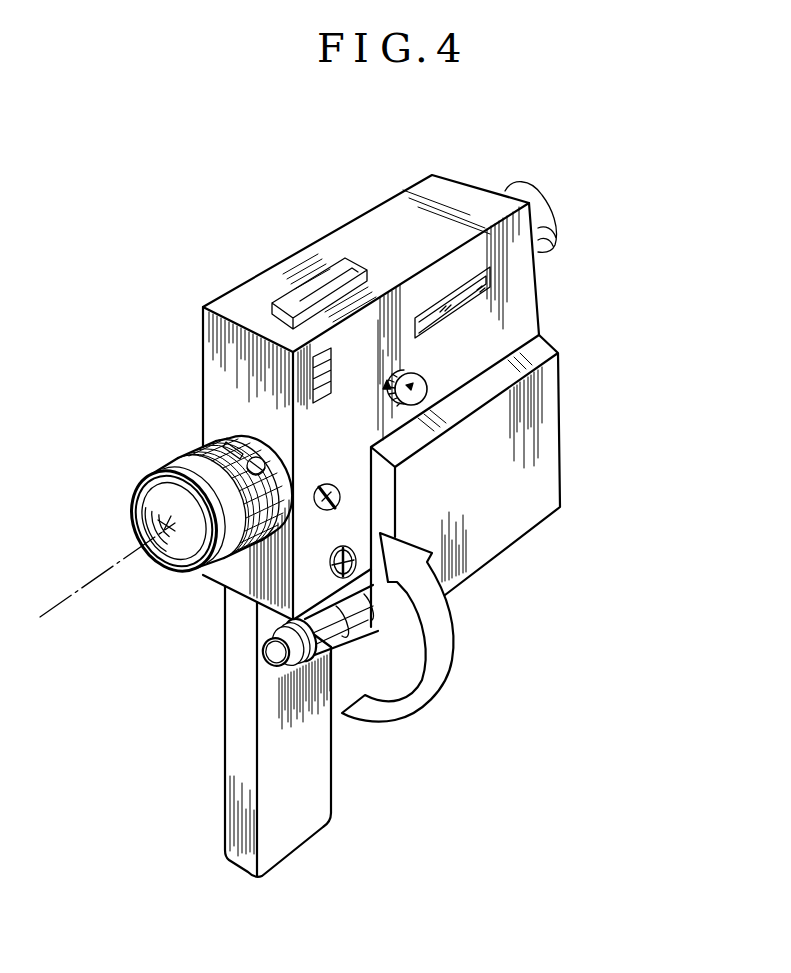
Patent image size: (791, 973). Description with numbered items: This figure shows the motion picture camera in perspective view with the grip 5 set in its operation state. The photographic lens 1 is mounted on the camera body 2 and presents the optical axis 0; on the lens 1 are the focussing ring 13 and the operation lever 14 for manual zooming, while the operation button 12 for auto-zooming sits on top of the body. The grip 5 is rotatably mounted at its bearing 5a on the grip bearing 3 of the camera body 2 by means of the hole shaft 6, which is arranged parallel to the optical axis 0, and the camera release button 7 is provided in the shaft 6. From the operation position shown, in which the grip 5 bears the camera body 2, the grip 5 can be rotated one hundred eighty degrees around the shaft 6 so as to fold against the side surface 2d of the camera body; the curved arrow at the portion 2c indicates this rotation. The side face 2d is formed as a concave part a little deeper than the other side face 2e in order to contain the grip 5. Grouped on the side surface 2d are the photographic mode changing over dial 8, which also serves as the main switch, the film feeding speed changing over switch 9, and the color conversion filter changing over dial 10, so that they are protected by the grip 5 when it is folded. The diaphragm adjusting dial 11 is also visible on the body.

The optical axis 0 is at (67, 597).
The photographic lens 1 is at (176, 471).
The camera body 2 is at (545, 289).
The rotatable grip mounting portion 2c is at (385, 600).
The side surface of the camera body 2d is at (329, 452).
The other side face of the camera body 2e is at (492, 512).
The grip bearing 3 is at (340, 620).
The grip 5 is at (300, 827).
The bearing of the grip 5a is at (335, 660).
The hole shaft 6 is at (274, 633).
The camera release button 7 is at (263, 650).
The photographic mode changing over dial 8 is at (330, 567).
The film feeding speed changing over switch 9 is at (322, 512).
The color conversion filter changing over dial 10 is at (331, 366).
The diaphragm adjusting dial 11 is at (415, 393).
The operation button for auto-zooming 12 is at (322, 292).
The focussing ring 13 is at (186, 452).
The operation lever for manual zooming 14 is at (262, 461).